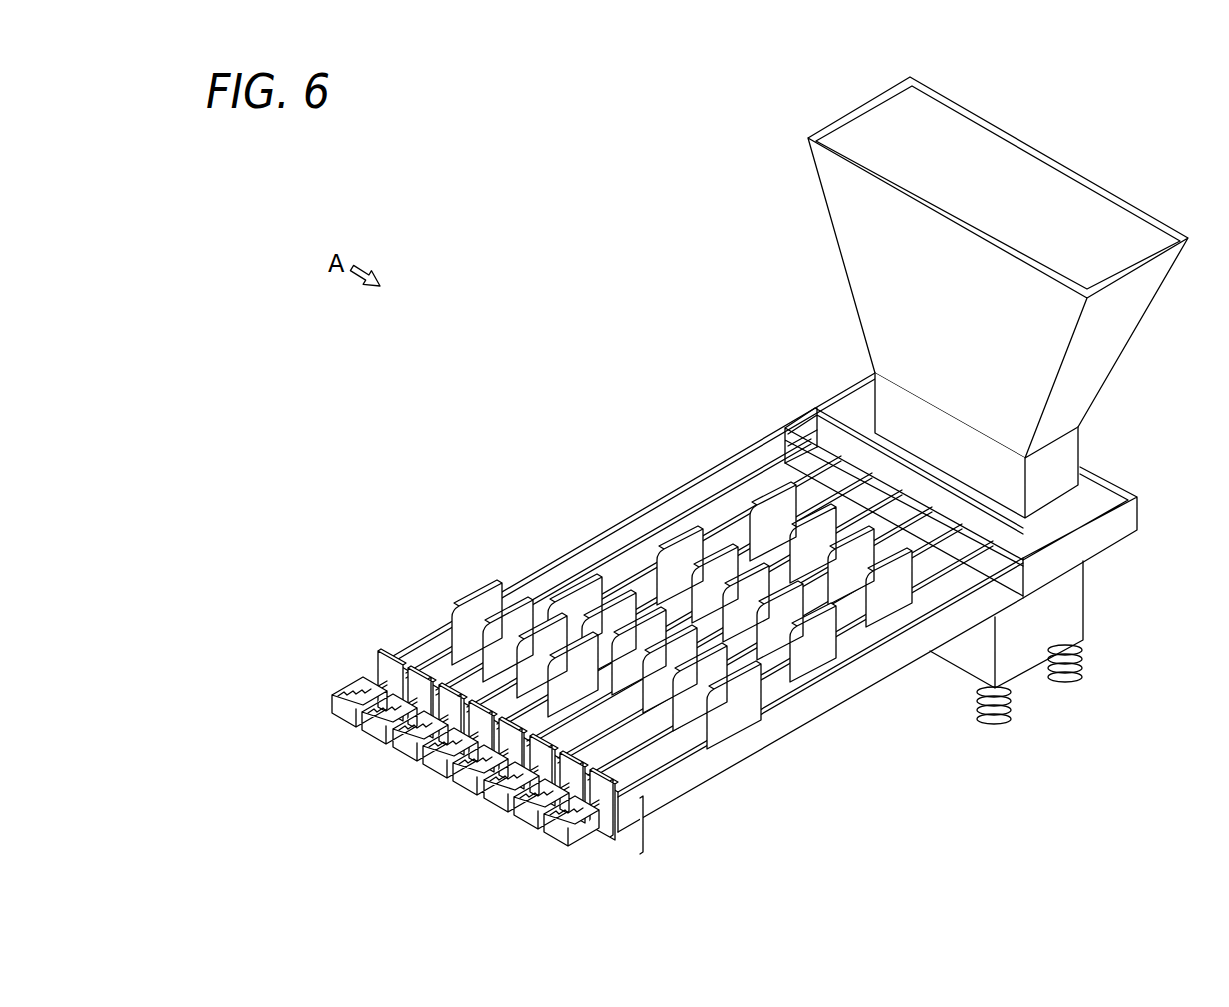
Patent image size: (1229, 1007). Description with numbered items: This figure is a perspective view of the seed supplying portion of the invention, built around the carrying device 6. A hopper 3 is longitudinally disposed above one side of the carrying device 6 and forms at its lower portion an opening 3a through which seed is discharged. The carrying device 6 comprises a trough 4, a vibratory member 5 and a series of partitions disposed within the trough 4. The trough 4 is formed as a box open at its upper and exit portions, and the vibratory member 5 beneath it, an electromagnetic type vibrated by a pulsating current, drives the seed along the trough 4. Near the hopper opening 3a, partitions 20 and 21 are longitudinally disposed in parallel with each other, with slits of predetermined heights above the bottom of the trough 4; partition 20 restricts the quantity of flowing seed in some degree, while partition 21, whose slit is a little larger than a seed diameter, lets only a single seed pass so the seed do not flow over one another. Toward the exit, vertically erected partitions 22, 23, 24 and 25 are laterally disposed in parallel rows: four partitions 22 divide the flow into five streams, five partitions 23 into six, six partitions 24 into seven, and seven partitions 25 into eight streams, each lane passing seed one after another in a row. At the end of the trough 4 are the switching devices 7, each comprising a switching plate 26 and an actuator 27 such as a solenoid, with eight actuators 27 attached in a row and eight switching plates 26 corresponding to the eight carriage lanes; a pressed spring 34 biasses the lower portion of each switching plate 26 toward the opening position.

The hopper 3 is at (856, 228).
The opening 3a is at (1070, 500).
The trough 4 is at (1130, 497).
The vibratory member 5 is at (1065, 617).
The carrying device 6 is at (512, 398).
The switching device 7 is at (297, 604).
The partition 20 is at (847, 418).
The partition 21 is at (800, 457).
The partition 22 is at (752, 570).
The partition 23 is at (657, 615).
The partition 24 is at (565, 635).
The partition 25 is at (450, 617).
The switching plate 26 is at (415, 665).
The actuator 27 is at (363, 730).
The pressed spring 34 is at (343, 683).